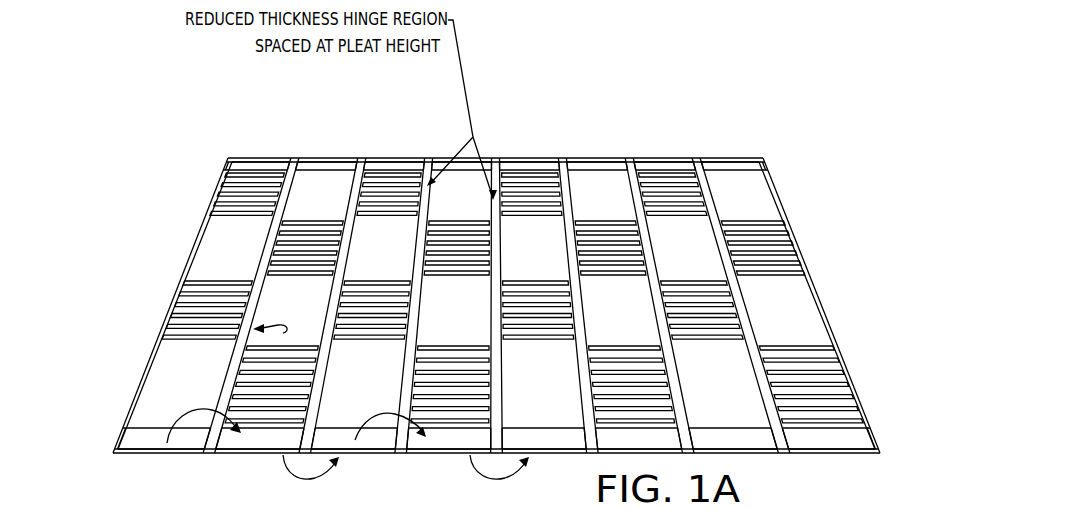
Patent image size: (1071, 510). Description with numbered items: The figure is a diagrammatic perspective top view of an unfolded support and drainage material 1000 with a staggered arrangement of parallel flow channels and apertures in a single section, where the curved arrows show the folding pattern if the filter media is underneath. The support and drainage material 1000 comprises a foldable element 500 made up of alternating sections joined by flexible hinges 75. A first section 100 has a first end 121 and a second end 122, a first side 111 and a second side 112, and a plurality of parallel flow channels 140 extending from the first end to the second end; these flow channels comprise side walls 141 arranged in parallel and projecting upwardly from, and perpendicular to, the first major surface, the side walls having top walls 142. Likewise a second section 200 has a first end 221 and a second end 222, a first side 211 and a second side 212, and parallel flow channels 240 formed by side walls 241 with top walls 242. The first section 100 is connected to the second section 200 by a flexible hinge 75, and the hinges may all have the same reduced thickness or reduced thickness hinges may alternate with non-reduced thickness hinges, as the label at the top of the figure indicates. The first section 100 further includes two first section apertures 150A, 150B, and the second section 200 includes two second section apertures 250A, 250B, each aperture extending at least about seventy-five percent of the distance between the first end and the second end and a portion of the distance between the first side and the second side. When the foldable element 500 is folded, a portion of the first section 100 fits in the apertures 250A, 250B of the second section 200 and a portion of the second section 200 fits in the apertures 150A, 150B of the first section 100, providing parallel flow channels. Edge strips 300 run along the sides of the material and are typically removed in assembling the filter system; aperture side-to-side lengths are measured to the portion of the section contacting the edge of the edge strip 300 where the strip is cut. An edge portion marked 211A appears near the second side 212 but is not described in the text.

The support and drainage material 1000 is at (58, 97).
The foldable element 500 is at (118, 169).
The second section 200 is at (248, 170).
The first side 211 is at (267, 170).
The flexible hinge 75 is at (297, 160).
The first section 100 is at (318, 170).
The first side 111 is at (335, 167).
The parallel flow channels 240 is at (218, 186).
The side walls 241 is at (253, 218).
The second end 222 is at (260, 273).
The second section aperture 250A is at (223, 265).
The second section aperture 250B is at (176, 390).
The first section aperture 150A is at (320, 194).
The first section aperture 150B is at (286, 290).
The parallel flow channels 140 is at (345, 240).
The second end 122 is at (331, 320).
The top walls 242 is at (167, 328).
The first end 221 is at (150, 357).
The first end 121 is at (283, 333).
The side walls 141 is at (302, 337).
The top walls 142 is at (315, 400).
The second side 212 is at (150, 455).
The edge portion 211A is at (200, 505).
The second side 112 is at (258, 455).
The edge strips 300 is at (743, 165).